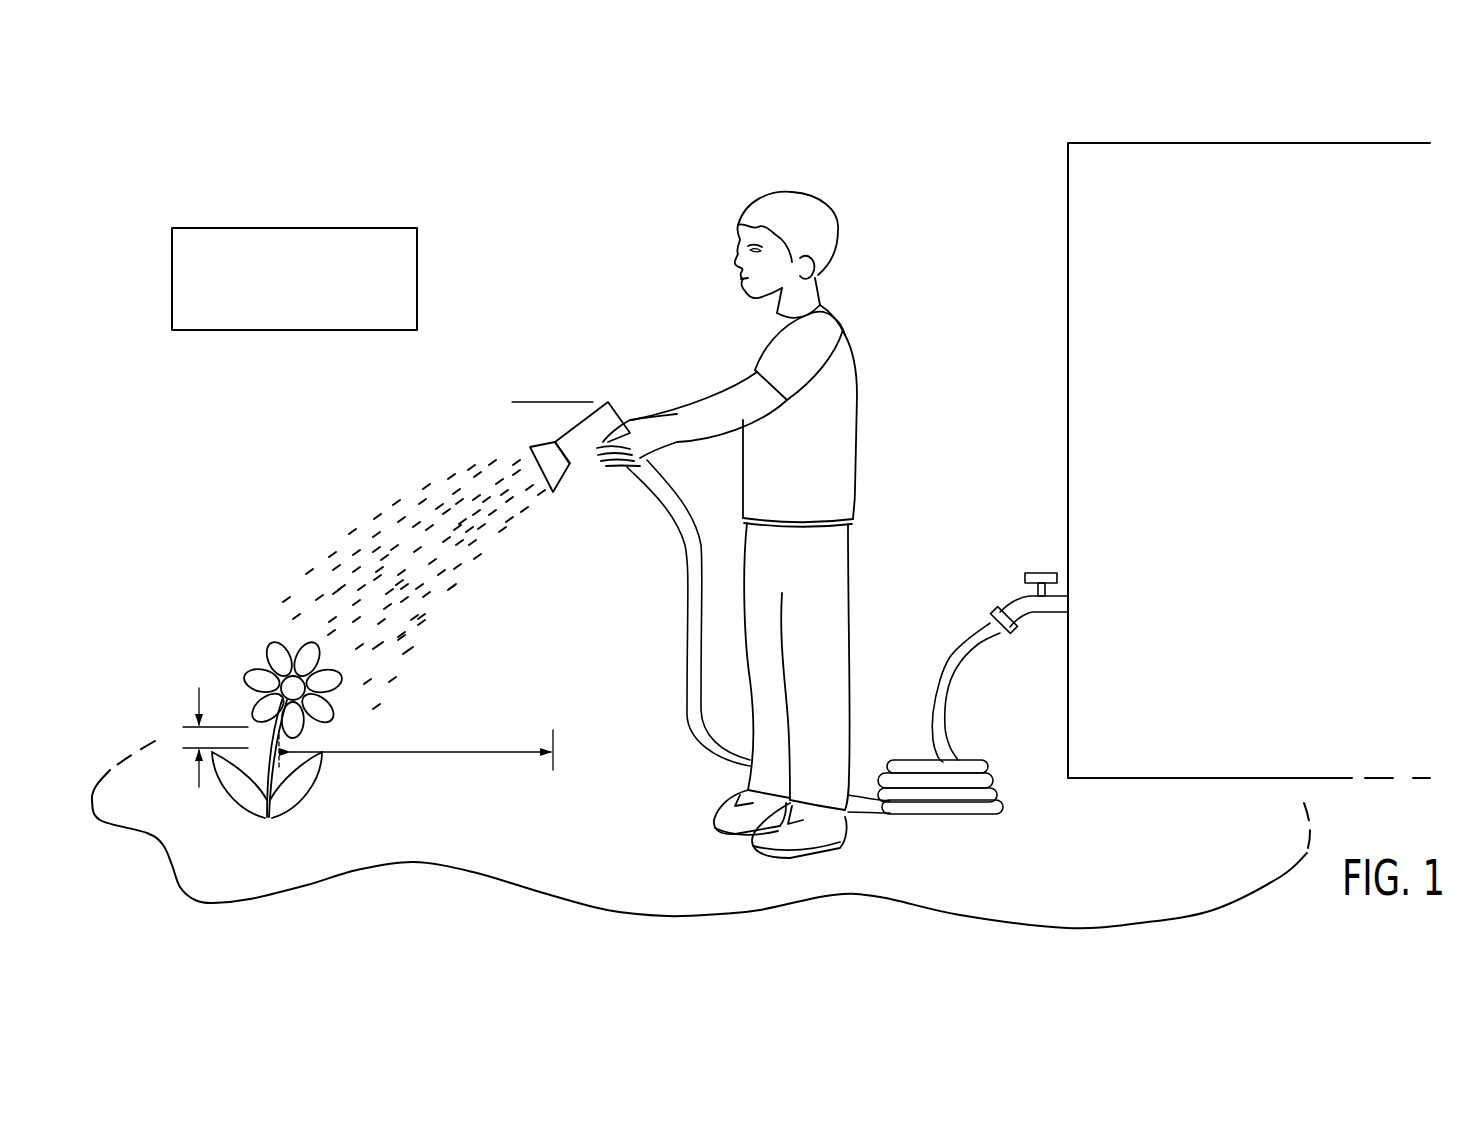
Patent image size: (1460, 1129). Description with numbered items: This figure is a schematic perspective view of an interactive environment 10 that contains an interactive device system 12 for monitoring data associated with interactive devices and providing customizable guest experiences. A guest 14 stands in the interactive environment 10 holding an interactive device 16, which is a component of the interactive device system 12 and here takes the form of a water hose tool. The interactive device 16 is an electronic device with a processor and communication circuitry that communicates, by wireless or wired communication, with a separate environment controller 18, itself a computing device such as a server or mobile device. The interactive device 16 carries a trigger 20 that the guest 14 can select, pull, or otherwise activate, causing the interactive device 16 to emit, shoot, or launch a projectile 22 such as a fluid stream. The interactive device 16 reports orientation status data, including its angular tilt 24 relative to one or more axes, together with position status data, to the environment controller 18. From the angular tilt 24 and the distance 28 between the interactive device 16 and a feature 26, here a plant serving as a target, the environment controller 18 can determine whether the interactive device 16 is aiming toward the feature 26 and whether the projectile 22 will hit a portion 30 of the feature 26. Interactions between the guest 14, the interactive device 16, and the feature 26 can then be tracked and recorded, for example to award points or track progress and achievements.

The interactive environment 10 is at (1211, 64).
The interactive device system 12 is at (924, 168).
The guest 14 is at (890, 317).
The interactive device 16 is at (560, 446).
The environment controller 18 is at (343, 228).
The trigger 20 is at (636, 400).
The projectile 22 is at (383, 494).
The angular tilt 24 is at (545, 397).
The feature 26 is at (296, 648).
The distance 28 is at (556, 762).
The portion 30 is at (190, 740).